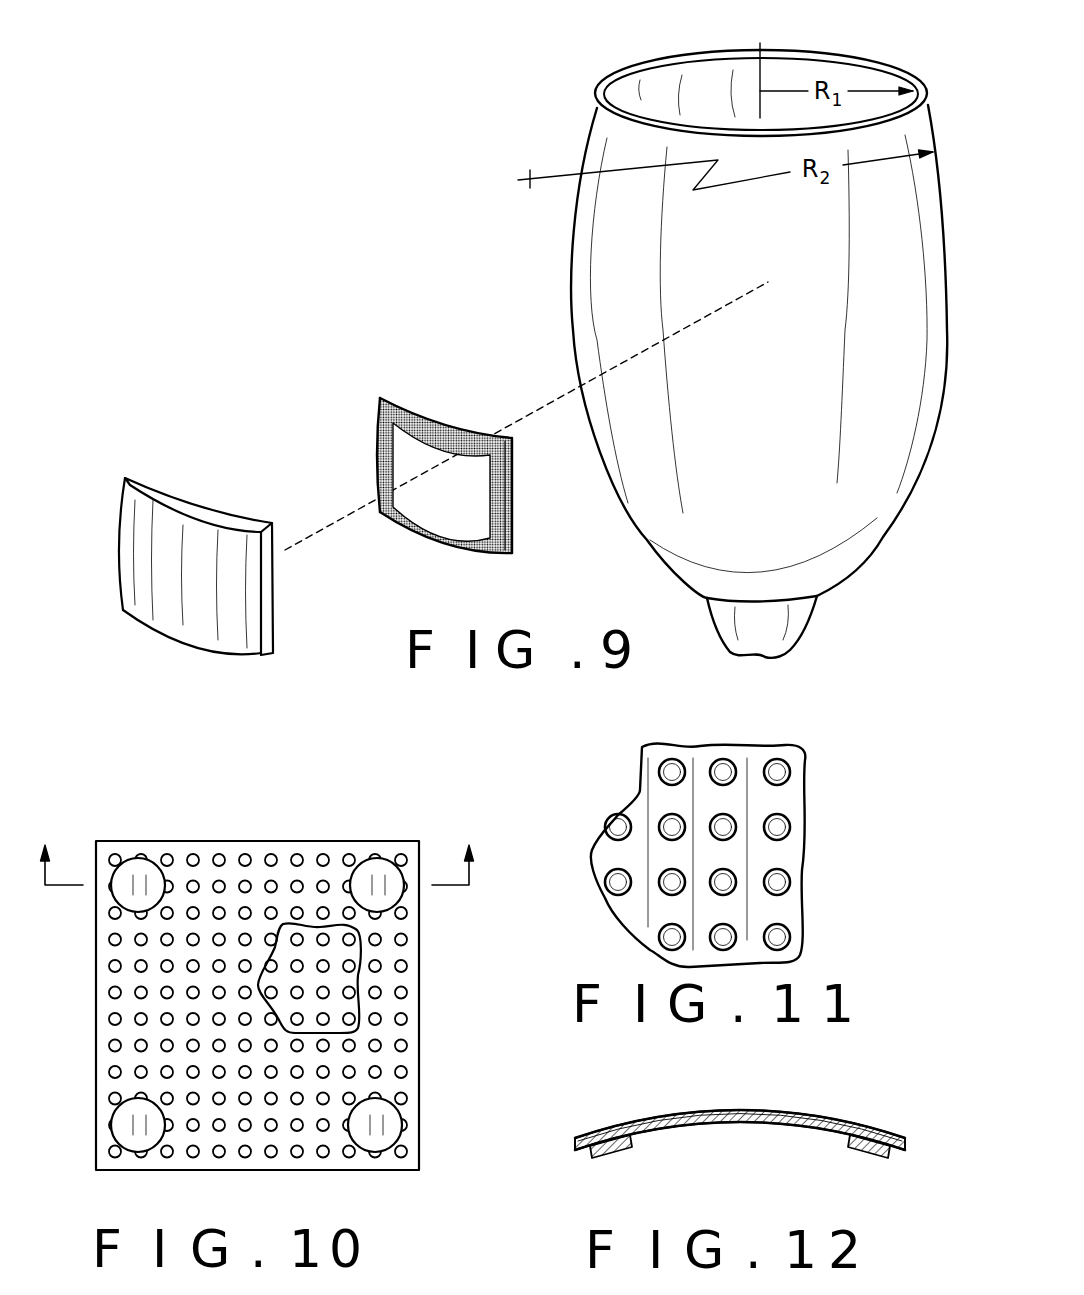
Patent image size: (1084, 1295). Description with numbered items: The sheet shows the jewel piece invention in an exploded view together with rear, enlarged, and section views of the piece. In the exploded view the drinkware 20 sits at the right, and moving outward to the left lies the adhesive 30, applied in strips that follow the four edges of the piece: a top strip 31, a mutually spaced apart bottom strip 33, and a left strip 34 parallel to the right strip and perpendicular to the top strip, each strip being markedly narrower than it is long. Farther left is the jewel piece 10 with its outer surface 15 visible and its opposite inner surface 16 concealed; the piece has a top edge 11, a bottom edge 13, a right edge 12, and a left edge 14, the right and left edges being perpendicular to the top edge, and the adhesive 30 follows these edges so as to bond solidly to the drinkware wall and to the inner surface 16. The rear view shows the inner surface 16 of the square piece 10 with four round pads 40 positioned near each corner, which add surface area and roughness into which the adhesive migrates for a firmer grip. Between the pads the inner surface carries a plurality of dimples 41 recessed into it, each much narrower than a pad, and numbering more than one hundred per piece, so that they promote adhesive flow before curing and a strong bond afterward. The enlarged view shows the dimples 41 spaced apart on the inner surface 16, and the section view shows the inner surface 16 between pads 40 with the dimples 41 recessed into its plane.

In FIG. 9, the jewel piece 10 is at (208, 660).
In FIG. 9, the top edge 11 is at (155, 493).
In FIG. 10, the top edge 11 is at (363, 957).
In FIG. 9, the right edge 12 is at (270, 598).
In FIG. 10, the right edge 12 is at (260, 848).
In FIG. 9, the bottom edge 13 is at (167, 643).
In FIG. 9, the left edge 14 is at (117, 543).
In FIG. 9, the outer surface 15 is at (168, 577).
In FIG. 12, the outer surface 15 is at (742, 1112).
In FIG. 9, the inner surface 16 is at (195, 507).
In FIG. 10, the inner surface 16 is at (178, 1032).
In FIG. 12, the inner surface 16 is at (742, 1127).
In FIG. 9, the glass vessel 20 is at (675, 55).
In FIG. 9, the adhesive 30 is at (472, 555).
In FIG. 9, the top strip 31 is at (430, 422).
In FIG. 9, the bottom strip 33 is at (447, 548).
In FIG. 9, the left strip 34 is at (377, 463).
In FIG. 10, the pads 40 is at (133, 880).
In FIG. 12, the pads 40 is at (613, 1153).
In FIG. 10, the dimples 41 is at (218, 885).
In FIG. 11, the dimples 41 is at (783, 765).
In FIG. 12, the dimples 41 is at (722, 1128).